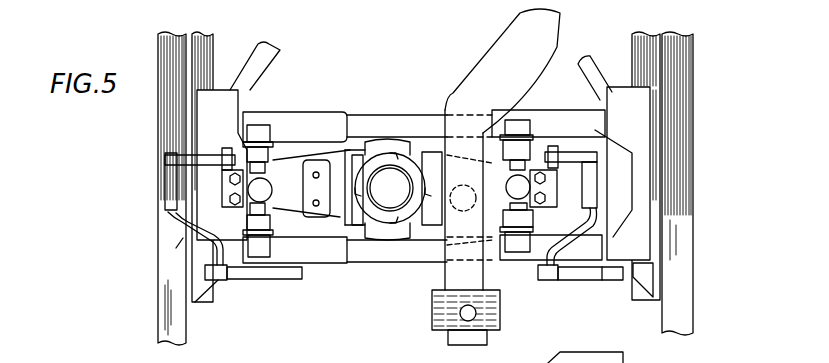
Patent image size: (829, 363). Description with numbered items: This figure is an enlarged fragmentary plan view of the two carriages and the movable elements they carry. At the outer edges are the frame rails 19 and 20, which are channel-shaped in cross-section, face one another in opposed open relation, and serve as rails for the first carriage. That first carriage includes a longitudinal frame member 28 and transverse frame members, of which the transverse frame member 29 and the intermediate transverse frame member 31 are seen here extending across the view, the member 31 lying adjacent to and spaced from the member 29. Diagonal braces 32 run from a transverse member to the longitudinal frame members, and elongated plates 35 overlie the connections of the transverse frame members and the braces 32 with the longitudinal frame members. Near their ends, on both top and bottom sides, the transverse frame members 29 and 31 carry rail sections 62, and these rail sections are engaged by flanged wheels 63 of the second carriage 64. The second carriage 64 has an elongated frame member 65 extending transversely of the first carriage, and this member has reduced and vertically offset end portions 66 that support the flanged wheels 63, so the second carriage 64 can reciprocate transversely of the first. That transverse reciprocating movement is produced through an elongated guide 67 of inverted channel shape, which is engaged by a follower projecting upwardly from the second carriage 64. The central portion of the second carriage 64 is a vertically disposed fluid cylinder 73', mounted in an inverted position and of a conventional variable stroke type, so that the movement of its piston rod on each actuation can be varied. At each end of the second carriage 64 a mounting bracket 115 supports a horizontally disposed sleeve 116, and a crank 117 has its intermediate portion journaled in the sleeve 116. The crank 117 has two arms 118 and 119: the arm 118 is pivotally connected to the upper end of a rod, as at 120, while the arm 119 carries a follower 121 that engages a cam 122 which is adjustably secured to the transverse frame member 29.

The frame rail 19 is at (186, 324).
The frame rail 20 is at (688, 322).
The longitudinal frame member 28 is at (650, 72).
The transverse frame member 29 is at (407, 255).
The intermediate transverse frame member 31 is at (426, 118).
The diagonal brace 32 is at (278, 52).
The elongated plate 35 is at (240, 115).
The rail section 62 is at (330, 118).
The flanged wheel 63 is at (268, 135).
The second carriage 64 is at (348, 148).
The elongated frame member 65 is at (338, 228).
The reduced and vertically offset end portion 66 is at (285, 177).
The elongated guide 67 is at (486, 65).
The fluid cylinder 73' is at (392, 223).
The mounting bracket 115 is at (570, 187).
The sleeve 116 is at (168, 185).
The crank 117 is at (170, 217).
The arm 118 is at (185, 163).
The arm 119 is at (183, 237).
The pivotal connection 120 is at (218, 158).
The follower 121 is at (222, 278).
The cam 122 is at (258, 279).